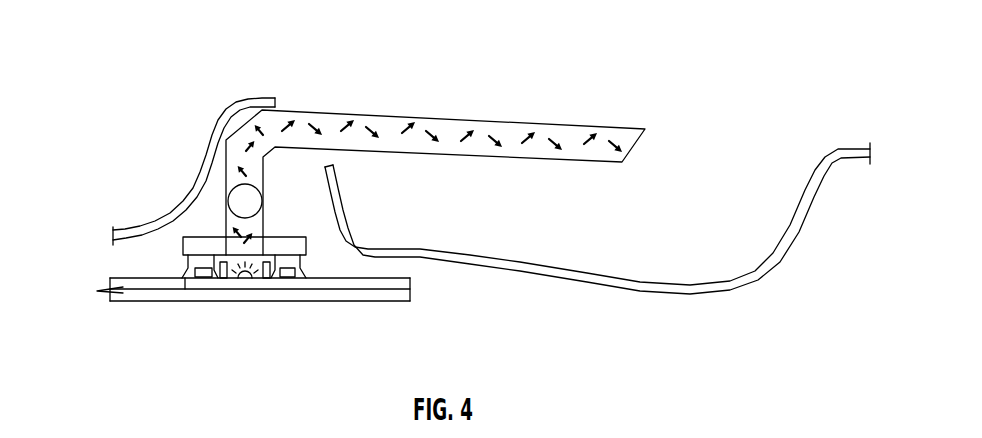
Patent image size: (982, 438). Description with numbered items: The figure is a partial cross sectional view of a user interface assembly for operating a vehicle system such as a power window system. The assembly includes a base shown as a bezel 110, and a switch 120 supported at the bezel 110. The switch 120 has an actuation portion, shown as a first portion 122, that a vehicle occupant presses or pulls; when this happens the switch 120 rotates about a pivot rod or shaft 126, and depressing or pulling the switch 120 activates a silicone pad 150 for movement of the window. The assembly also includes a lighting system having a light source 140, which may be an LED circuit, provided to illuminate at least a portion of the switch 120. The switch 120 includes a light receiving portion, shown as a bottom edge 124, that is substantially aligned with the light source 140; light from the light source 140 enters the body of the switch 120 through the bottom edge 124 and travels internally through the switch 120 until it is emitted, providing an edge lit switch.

The bezel 110 is at (847, 150).
The switch 120 is at (435, 130).
The first portion 122 is at (385, 110).
The bottom edge 124 is at (227, 236).
The pivot rod or shaft 126 is at (245, 202).
The light source 140 is at (243, 280).
The silicone pad 150 is at (208, 270).